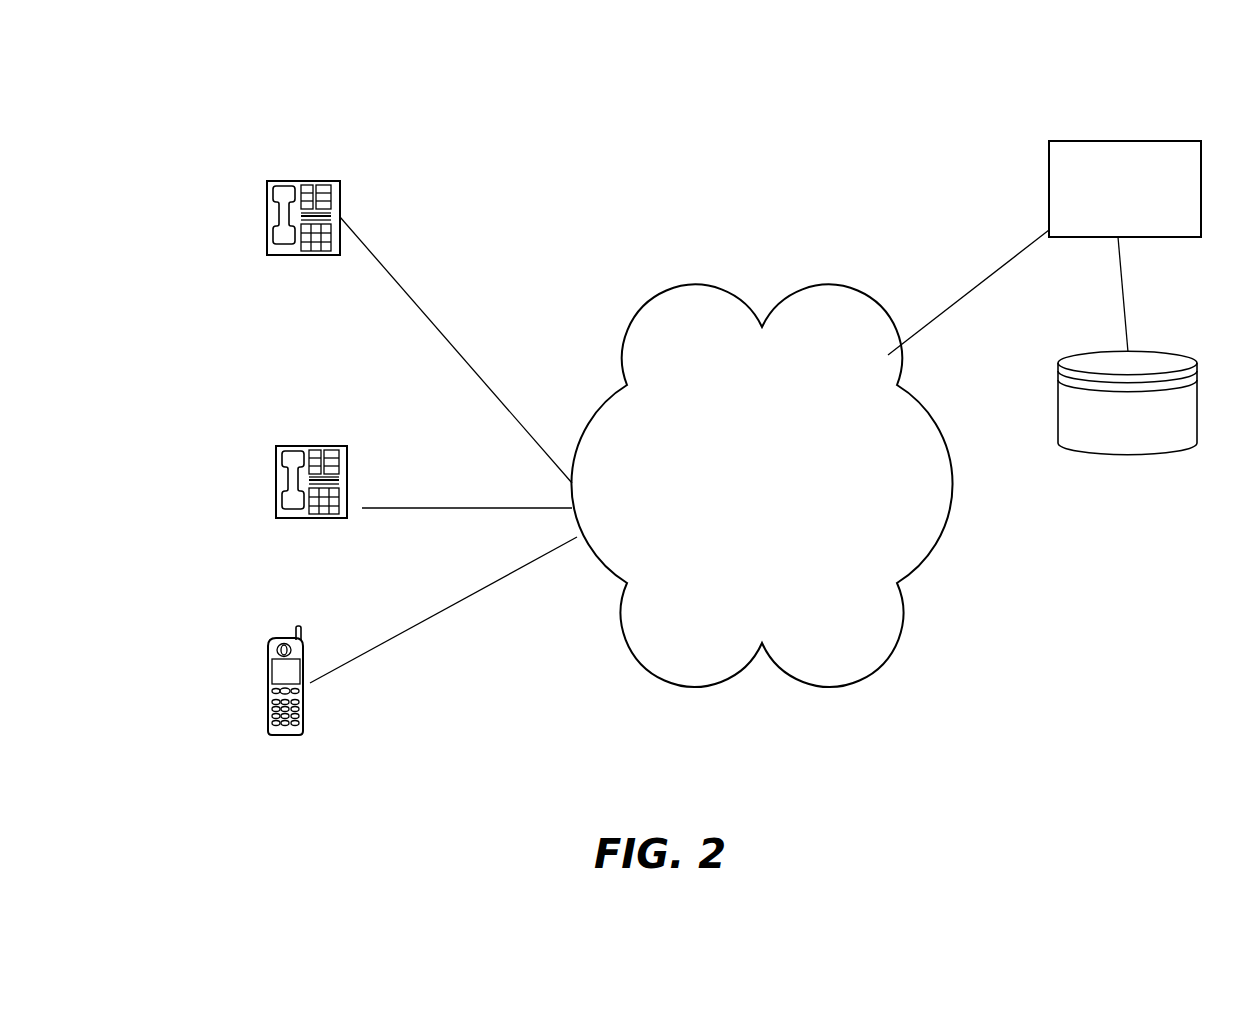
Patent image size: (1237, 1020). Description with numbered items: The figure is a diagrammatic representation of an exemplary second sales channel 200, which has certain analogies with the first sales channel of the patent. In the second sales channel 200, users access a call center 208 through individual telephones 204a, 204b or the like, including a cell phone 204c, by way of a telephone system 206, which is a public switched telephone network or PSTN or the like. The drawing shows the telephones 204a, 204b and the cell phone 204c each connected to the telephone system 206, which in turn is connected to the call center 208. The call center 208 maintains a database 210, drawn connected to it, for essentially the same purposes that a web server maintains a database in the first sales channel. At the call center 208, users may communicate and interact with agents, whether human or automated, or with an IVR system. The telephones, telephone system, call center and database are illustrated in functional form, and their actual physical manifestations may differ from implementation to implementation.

The second sales channel 200 is at (556, 50).
The telephone 204a is at (287, 182).
The telephone 204b is at (310, 446).
The cell phone 204c is at (265, 668).
The telephone system 206 is at (702, 285).
The call center 208 is at (1054, 140).
The database 210 is at (1122, 457).